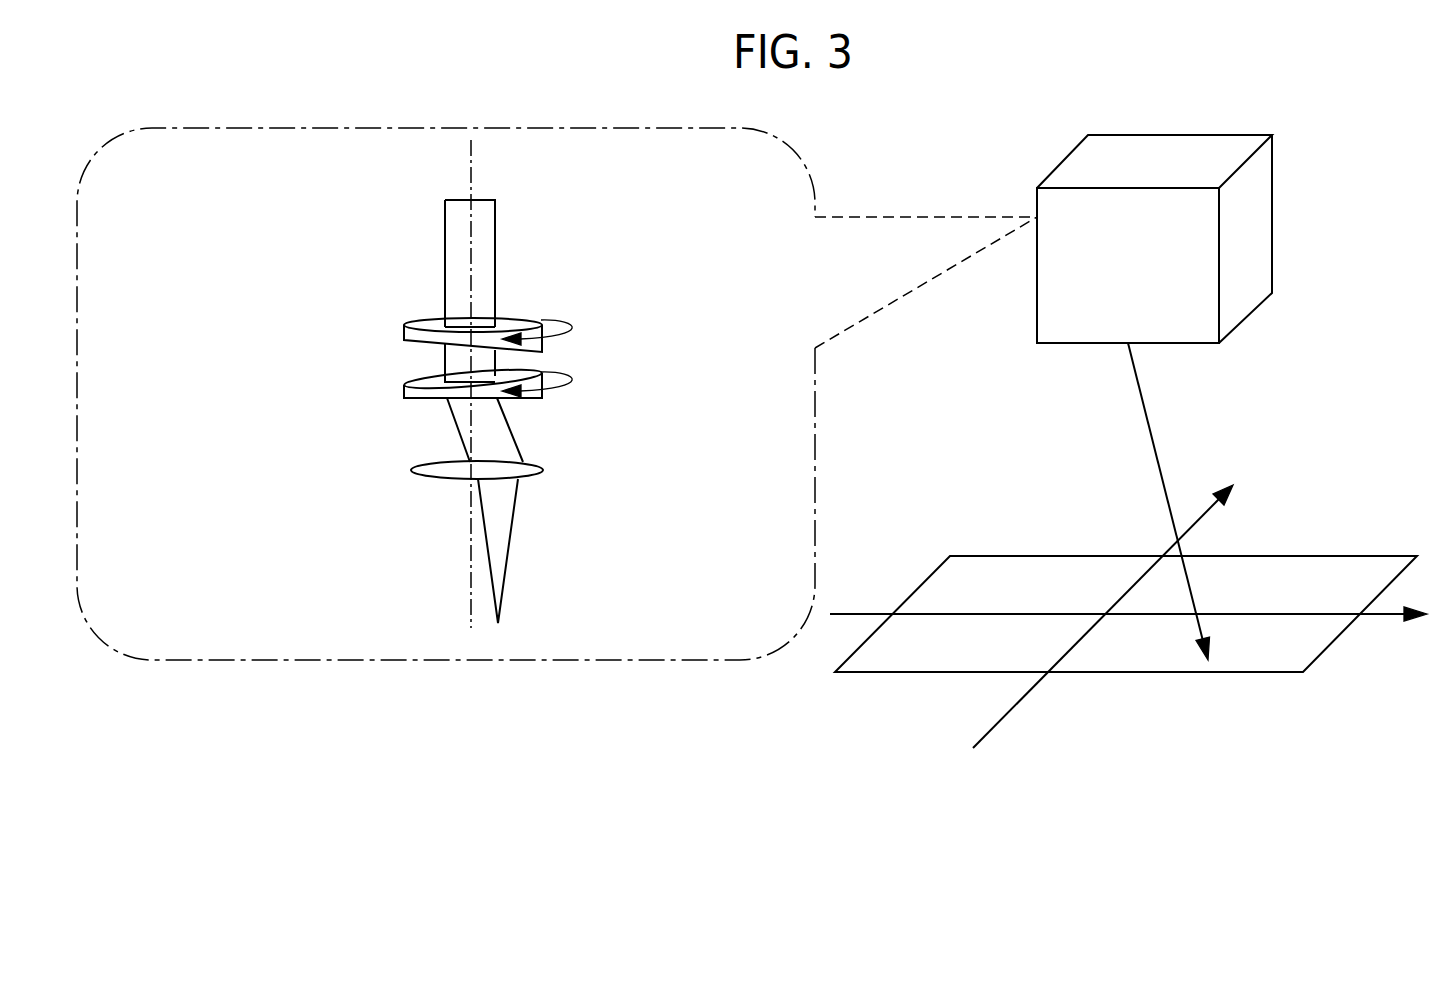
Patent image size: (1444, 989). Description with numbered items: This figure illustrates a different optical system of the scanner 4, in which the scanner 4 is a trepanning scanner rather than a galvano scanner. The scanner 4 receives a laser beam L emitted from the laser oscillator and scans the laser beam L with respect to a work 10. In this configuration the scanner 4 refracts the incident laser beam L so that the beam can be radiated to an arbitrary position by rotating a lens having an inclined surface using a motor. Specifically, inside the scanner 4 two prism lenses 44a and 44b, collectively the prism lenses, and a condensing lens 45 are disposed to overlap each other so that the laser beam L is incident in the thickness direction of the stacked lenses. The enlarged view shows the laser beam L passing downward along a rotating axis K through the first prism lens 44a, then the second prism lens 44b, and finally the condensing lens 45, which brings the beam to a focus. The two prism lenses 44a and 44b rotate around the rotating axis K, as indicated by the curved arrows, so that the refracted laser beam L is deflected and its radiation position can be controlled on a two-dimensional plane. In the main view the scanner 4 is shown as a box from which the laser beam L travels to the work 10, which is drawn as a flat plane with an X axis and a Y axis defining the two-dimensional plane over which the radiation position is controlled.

The scanner 4 is at (1272, 218).
The work 10 is at (1343, 563).
The prism lens 44a is at (405, 332).
The prism lens 44b is at (545, 395).
The condensing lens 45 is at (437, 462).
The laser beam L is at (445, 227).
The rotating axis K is at (470, 540).
The X axis X is at (1128, 634).
The Y axis Y is at (1123, 610).